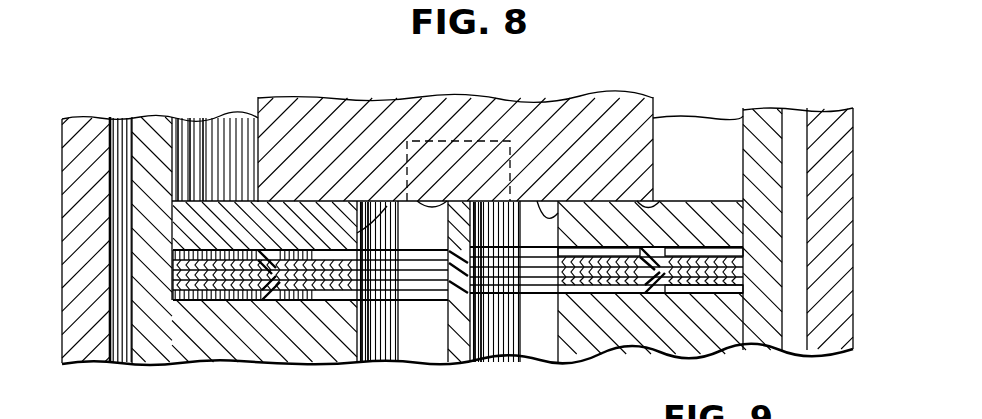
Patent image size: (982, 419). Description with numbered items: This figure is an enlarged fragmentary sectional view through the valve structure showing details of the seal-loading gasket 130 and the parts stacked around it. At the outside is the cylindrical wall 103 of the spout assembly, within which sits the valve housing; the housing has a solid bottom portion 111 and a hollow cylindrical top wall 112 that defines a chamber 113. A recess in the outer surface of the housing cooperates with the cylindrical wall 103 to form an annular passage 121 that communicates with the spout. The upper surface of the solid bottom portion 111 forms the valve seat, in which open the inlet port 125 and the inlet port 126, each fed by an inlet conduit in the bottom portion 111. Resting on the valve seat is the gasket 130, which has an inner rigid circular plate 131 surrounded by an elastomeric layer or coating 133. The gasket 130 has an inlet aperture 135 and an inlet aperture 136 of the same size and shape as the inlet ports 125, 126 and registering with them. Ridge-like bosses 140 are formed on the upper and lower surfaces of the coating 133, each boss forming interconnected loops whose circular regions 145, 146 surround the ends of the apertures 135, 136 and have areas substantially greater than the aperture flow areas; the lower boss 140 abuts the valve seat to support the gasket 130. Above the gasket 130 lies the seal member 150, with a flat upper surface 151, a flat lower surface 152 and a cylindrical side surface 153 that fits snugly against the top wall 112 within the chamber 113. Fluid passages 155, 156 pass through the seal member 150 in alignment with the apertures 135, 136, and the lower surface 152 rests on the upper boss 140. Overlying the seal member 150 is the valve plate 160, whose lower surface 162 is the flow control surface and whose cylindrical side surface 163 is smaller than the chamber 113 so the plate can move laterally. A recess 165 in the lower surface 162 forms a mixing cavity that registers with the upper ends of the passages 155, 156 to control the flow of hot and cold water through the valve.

The cylindrical wall 103 is at (83, 155).
The solid bottom portion 111 is at (175, 342).
The hollow cylindrical top wall 112 is at (150, 117).
The chamber 113 is at (716, 130).
The annular passage 121 is at (118, 364).
The inlet port 125 is at (500, 303).
The inlet port 126 is at (436, 300).
The seal-loading gasket 130 is at (708, 253).
The inner rigid circular plate 131 is at (190, 276).
The elastomeric layer or coating 133 is at (693, 287).
The inlet aperture 135 is at (548, 275).
The inlet aperture 136 is at (393, 345).
The ridge-like bosses 140 is at (265, 247).
The circular region 145 is at (583, 256).
The circular region 146 is at (312, 264).
The seal member 150 is at (200, 232).
The upper surface 151 is at (235, 187).
The lower surface 152 is at (738, 251).
The cylindrical side surface 153 is at (742, 236).
The fluid passage 155 is at (549, 210).
The fluid passage 156 is at (363, 232).
The valve plate 160 is at (598, 125).
The lower surface 162 is at (657, 211).
The cylindrical side surface 163 is at (655, 111).
The recess 165 is at (467, 152).